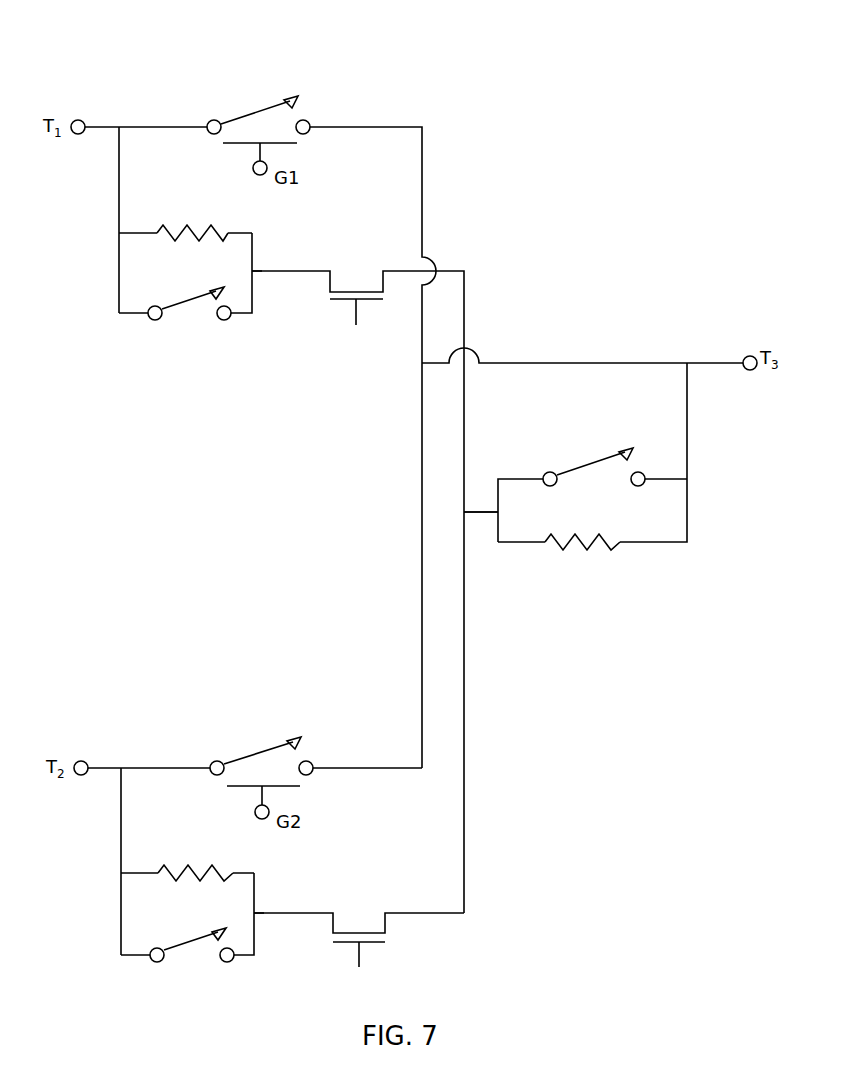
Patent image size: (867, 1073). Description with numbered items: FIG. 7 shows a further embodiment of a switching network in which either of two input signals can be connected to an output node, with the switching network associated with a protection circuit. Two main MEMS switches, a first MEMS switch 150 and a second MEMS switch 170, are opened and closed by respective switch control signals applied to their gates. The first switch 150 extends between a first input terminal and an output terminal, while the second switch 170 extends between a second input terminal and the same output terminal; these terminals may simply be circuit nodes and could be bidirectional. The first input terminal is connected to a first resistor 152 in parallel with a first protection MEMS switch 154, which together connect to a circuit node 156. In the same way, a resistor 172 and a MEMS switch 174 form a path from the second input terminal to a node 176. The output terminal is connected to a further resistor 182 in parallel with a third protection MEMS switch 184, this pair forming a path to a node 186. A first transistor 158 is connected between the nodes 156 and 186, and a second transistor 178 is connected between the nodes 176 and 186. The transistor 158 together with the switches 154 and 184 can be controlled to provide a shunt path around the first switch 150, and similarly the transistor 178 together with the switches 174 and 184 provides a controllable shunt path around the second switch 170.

The first MEMS switch 150 is at (256, 103).
The first resistor 152 is at (172, 226).
The first protection MEMS switch 154 is at (180, 304).
The circuit node 156 is at (257, 268).
The first transistor 158 is at (355, 279).
The second MEMS switch 170 is at (262, 750).
The resistor 172 is at (172, 866).
The MEMS switch 174 is at (180, 946).
The node 176 is at (258, 910).
The second transistor 178 is at (390, 938).
The further resistor 182 is at (578, 548).
The third protection MEMS switch 184 is at (592, 462).
The node 186 is at (500, 512).